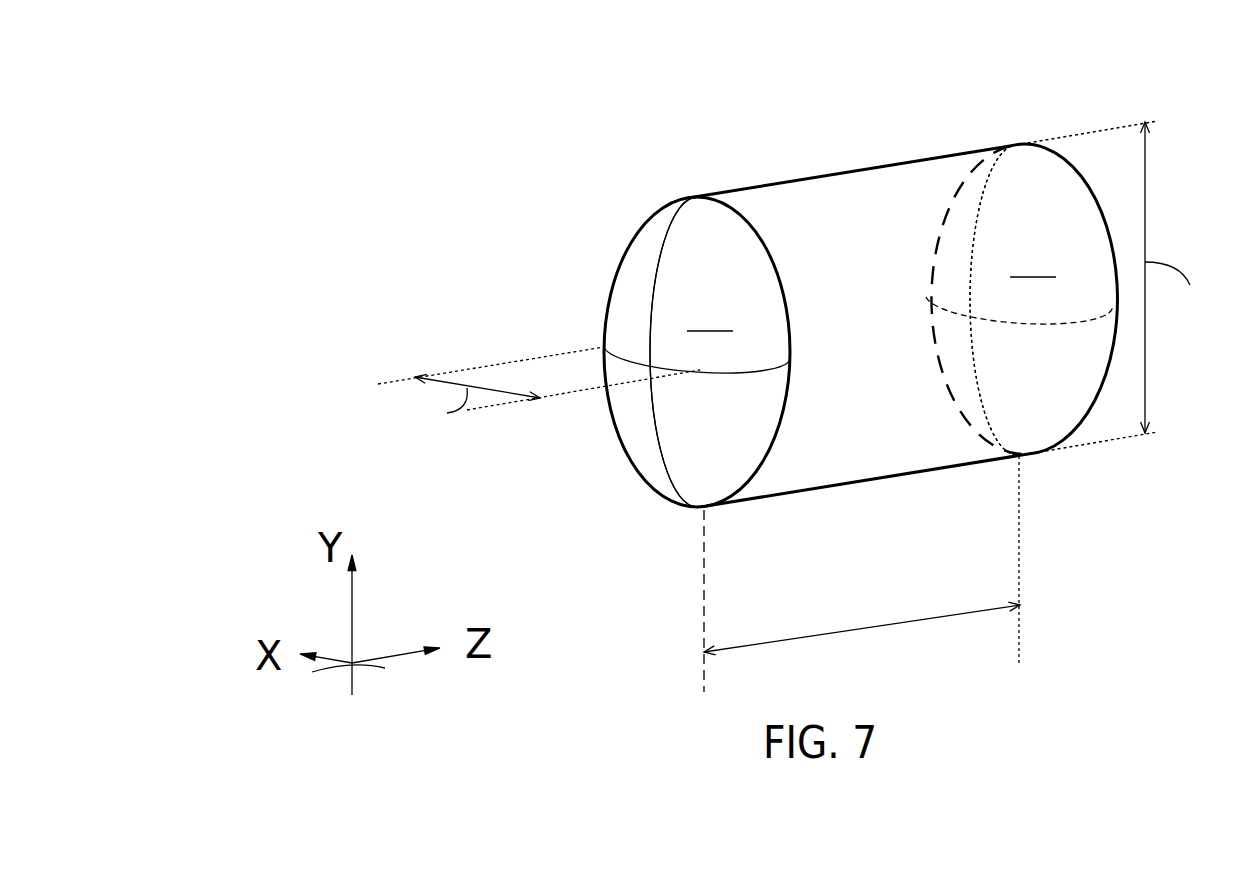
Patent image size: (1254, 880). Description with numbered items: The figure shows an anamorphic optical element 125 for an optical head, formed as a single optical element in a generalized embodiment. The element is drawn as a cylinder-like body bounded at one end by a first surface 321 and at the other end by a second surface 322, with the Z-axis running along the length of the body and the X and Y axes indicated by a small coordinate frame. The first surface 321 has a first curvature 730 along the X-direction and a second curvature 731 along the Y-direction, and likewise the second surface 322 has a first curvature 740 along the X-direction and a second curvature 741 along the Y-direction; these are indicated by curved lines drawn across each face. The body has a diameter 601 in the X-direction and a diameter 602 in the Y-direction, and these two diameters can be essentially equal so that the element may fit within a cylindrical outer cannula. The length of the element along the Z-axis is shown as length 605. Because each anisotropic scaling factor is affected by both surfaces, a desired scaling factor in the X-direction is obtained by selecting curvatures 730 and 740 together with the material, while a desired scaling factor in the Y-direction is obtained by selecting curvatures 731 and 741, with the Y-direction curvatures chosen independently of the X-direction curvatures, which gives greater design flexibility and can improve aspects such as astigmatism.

The anamorphic optical element 125 is at (530, 83).
The first surface 321 is at (697, 352).
The second surface 322 is at (1018, 300).
The first curvature 730 is at (628, 355).
The second curvature 731 is at (672, 230).
The first curvature 740 is at (945, 310).
The second curvature 741 is at (992, 180).
The diameter 601 is at (497, 393).
The diameter 602 is at (1145, 172).
The length 605 is at (928, 618).